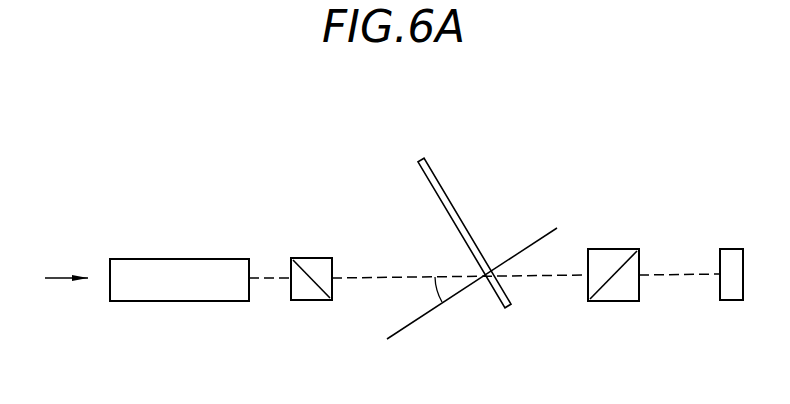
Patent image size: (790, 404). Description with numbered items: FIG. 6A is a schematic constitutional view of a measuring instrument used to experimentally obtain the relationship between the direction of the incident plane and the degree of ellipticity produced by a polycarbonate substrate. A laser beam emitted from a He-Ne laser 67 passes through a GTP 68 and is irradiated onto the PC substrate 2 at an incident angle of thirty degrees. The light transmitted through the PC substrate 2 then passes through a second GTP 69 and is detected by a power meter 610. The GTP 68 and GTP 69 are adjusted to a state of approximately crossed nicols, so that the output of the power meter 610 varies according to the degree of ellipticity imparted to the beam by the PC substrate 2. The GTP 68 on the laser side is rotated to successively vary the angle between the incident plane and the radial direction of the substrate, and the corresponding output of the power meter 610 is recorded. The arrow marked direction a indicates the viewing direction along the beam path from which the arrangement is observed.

The direction a is at (62, 277).
The He-Ne laser 67 is at (193, 258).
The GTP 68 is at (305, 257).
The PC substrate 2 is at (437, 178).
The GTP 69 is at (604, 249).
The power meter 610 is at (722, 302).